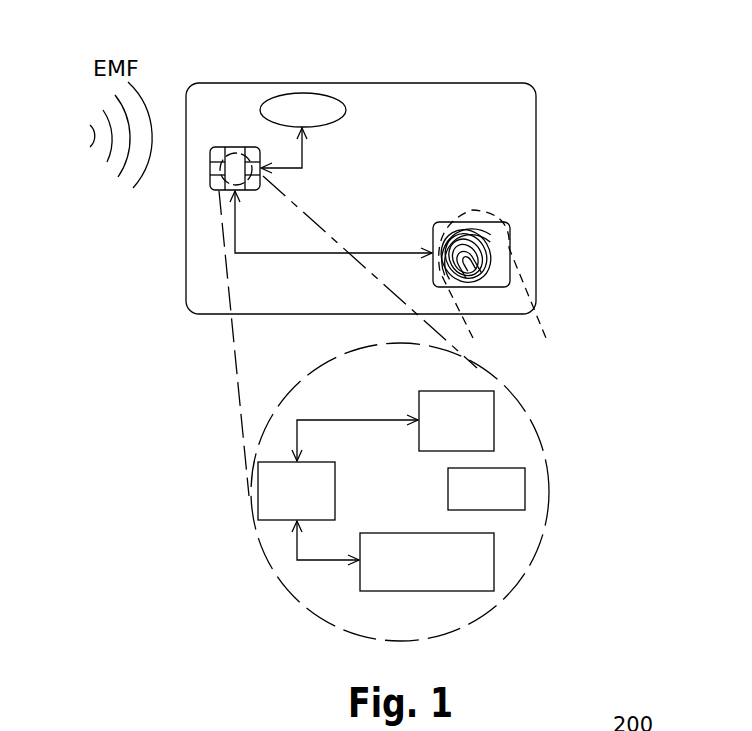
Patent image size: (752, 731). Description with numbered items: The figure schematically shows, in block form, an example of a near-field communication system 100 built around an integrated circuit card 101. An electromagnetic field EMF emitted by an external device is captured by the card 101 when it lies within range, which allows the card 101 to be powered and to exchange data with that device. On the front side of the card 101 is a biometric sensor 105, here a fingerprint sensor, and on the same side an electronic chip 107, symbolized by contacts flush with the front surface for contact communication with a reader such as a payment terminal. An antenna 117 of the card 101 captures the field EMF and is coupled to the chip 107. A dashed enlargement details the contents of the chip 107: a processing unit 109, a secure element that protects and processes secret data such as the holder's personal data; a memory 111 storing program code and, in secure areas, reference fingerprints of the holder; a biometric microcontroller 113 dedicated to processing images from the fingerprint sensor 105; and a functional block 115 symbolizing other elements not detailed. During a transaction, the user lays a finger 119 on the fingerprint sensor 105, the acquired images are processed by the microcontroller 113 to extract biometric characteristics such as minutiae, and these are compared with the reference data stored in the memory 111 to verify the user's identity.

The near-field communication system 100 is at (556, 76).
The integrated circuit card 101 is at (536, 172).
The biometric sensor 105 is at (510, 235).
The electronic chip 107 is at (210, 183).
The processing unit 109 is at (258, 503).
The memory 111 is at (494, 423).
The microcontroller 113 is at (494, 562).
The functional block 115 is at (525, 493).
The antenna 117 is at (308, 93).
The finger 119 is at (543, 328).